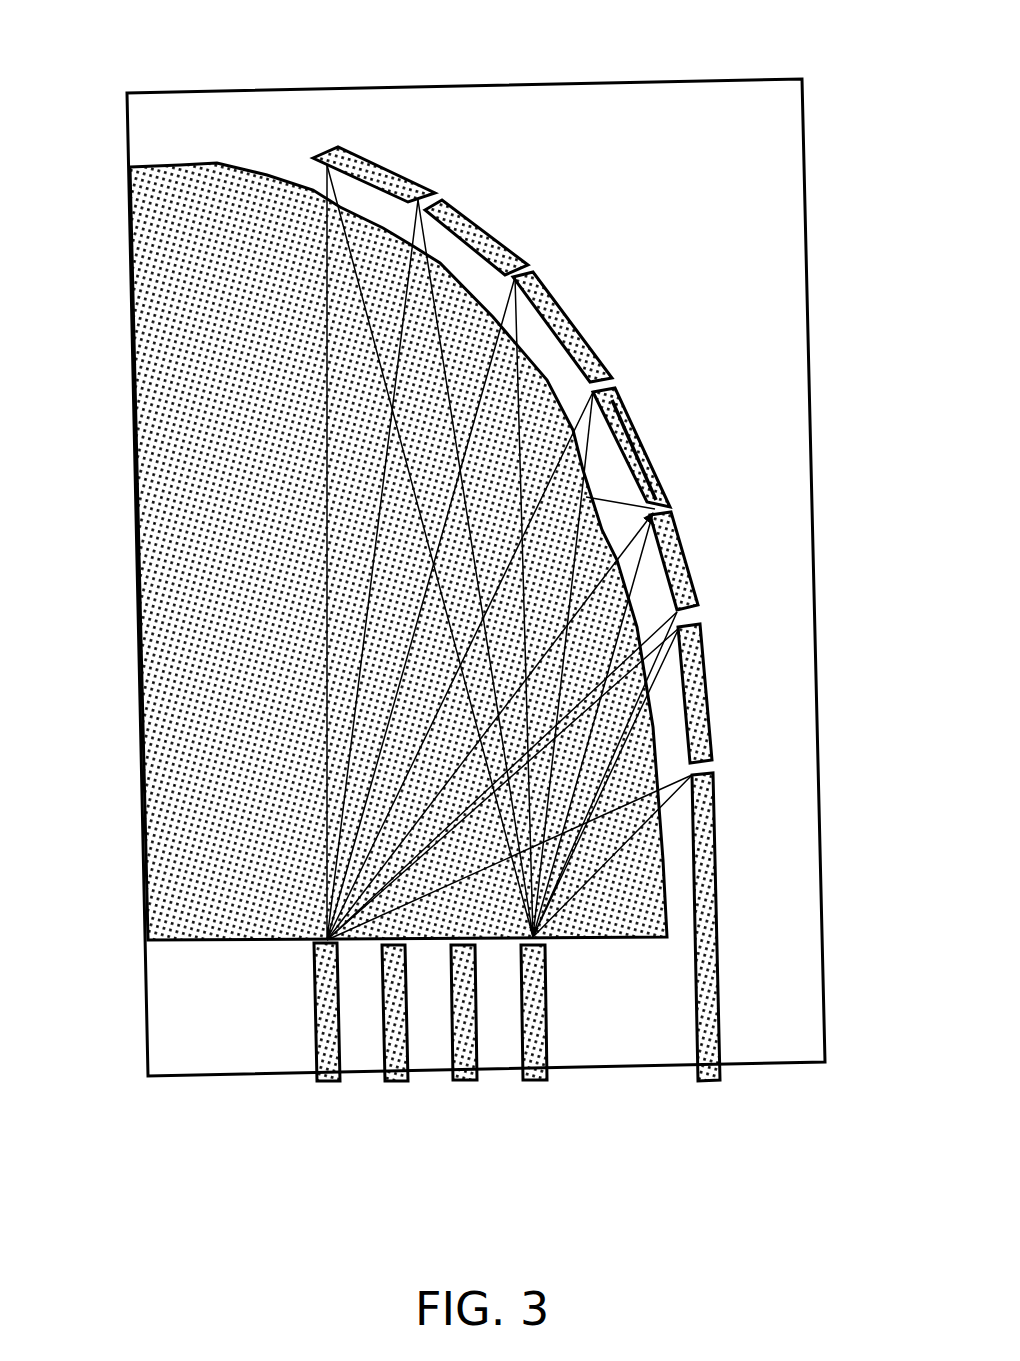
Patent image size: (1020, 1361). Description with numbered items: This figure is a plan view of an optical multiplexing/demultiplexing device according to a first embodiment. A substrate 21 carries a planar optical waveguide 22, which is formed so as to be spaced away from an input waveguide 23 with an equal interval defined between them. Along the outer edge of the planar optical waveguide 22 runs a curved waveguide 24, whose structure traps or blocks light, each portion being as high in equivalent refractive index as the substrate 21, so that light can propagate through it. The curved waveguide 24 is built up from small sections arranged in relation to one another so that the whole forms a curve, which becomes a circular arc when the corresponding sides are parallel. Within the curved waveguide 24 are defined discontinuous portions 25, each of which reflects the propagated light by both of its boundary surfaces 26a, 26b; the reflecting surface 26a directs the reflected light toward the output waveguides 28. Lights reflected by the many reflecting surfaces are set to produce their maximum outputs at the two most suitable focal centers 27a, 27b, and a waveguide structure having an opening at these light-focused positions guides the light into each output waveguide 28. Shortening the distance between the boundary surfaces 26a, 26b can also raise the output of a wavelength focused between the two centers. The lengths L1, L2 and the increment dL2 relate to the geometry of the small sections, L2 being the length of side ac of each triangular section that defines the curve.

The substrate 21 is at (632, 97).
The planar optical waveguide 22 is at (165, 533).
The input waveguide 23 is at (710, 1078).
The curved waveguide 24 is at (713, 722).
The discontinuous portions 25 is at (616, 455).
The reflecting surface 26a is at (462, 264).
The reflecting surface 26b is at (679, 614).
The focal center 27a is at (540, 950).
The focal center 27b is at (313, 946).
The output waveguides 28 is at (327, 1085).
The light ray L1 is at (617, 407).
The length of side ac L2 is at (698, 607).
The distance dL2 is at (580, 478).